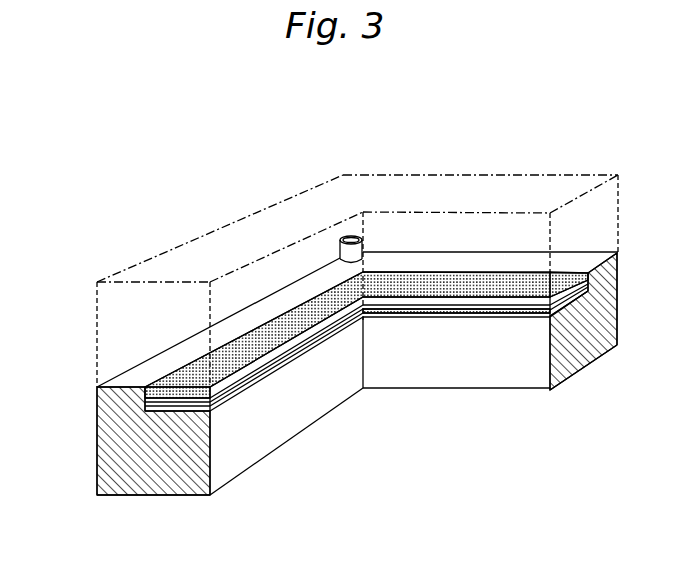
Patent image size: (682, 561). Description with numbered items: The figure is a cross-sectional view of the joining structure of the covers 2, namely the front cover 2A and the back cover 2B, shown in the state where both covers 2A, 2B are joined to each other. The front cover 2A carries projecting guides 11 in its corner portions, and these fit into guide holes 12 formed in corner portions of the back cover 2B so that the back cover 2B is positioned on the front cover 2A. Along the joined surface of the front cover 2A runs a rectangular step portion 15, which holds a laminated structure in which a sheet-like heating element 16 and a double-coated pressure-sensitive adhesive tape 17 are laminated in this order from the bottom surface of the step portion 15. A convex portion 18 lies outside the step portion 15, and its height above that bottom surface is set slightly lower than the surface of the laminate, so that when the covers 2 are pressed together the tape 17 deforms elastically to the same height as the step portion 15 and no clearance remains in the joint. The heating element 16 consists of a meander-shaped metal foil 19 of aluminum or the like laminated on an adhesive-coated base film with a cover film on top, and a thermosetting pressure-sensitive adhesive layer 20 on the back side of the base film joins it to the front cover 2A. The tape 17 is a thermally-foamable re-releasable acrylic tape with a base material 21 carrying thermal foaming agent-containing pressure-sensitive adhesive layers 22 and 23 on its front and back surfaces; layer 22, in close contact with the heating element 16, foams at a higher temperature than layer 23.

The covers 2 is at (312, 335).
The front cover 2A is at (96, 428).
The back cover 2B is at (96, 381).
The guide 11 is at (345, 236).
The guide hole 12 is at (364, 234).
The step portion 15 is at (220, 400).
The sheet-like heating element 16 is at (475, 335).
The double-coated pressure-sensitive adhesive tape 17 is at (475, 337).
The convex portion 18 is at (495, 253).
The meander-shaped metal foil 19 is at (437, 318).
The thermosetting pressure-sensitive adhesive layer 20 is at (396, 318).
The base material 21 is at (490, 318).
The thermal foaming agent-containing pressure-sensitive adhesive layer 22 is at (468, 318).
The thermal foaming agent-containing pressure-sensitive adhesive layer 23 is at (455, 353).